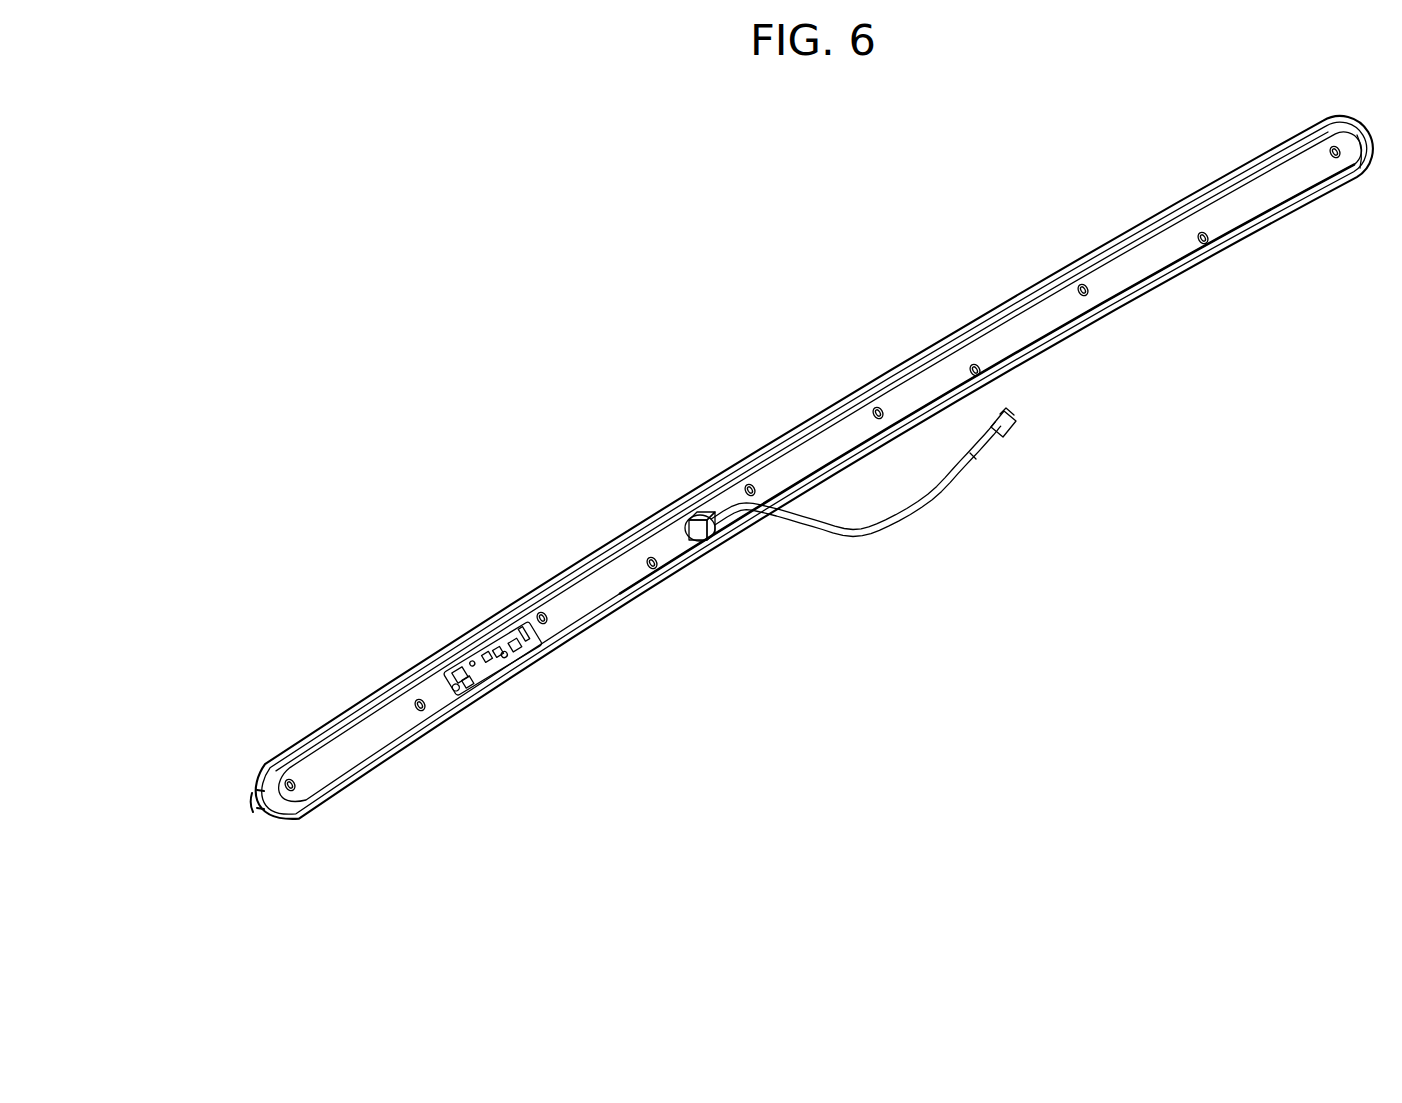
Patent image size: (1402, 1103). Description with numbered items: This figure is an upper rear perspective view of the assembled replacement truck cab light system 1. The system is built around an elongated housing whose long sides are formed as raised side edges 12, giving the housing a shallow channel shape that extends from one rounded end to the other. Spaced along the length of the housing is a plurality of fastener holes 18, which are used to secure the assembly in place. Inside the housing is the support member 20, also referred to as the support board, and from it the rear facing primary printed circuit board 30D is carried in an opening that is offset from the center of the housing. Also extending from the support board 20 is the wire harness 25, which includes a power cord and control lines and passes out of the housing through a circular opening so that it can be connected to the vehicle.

The replacement truck cab light system 1 is at (766, 485).
The raised side edges 12 is at (263, 806).
The fastener holes 18 is at (1079, 287).
The support member 20 is at (385, 738).
The wire harness 25 is at (870, 538).
The rear facing primary printed circuit board 30D is at (490, 673).